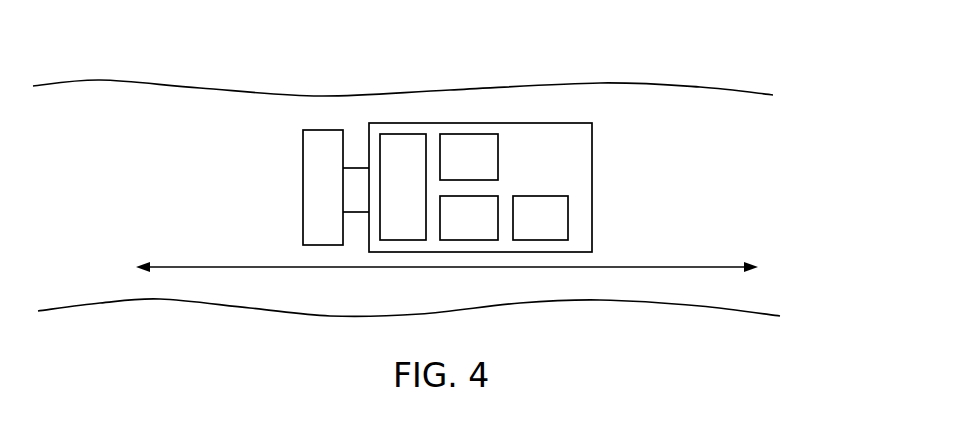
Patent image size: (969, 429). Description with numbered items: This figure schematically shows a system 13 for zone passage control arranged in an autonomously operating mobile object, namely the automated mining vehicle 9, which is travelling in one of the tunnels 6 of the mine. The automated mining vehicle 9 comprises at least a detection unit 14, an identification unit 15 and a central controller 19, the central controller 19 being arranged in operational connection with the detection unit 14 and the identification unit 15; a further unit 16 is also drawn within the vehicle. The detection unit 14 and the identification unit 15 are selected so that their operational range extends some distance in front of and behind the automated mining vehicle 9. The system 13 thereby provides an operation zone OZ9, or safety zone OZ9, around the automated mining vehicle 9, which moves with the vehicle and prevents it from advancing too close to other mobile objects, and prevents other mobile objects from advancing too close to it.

The tunnel 6 is at (208, 105).
The system for zone passage control 13 is at (456, 146).
The automated mining vehicle 9 is at (489, 168).
The detection unit 14 is at (452, 172).
The identification unit 15 is at (452, 233).
The module 16 is at (557, 233).
The central controller 19 is at (386, 200).
The operation zone OZ9 is at (205, 266).